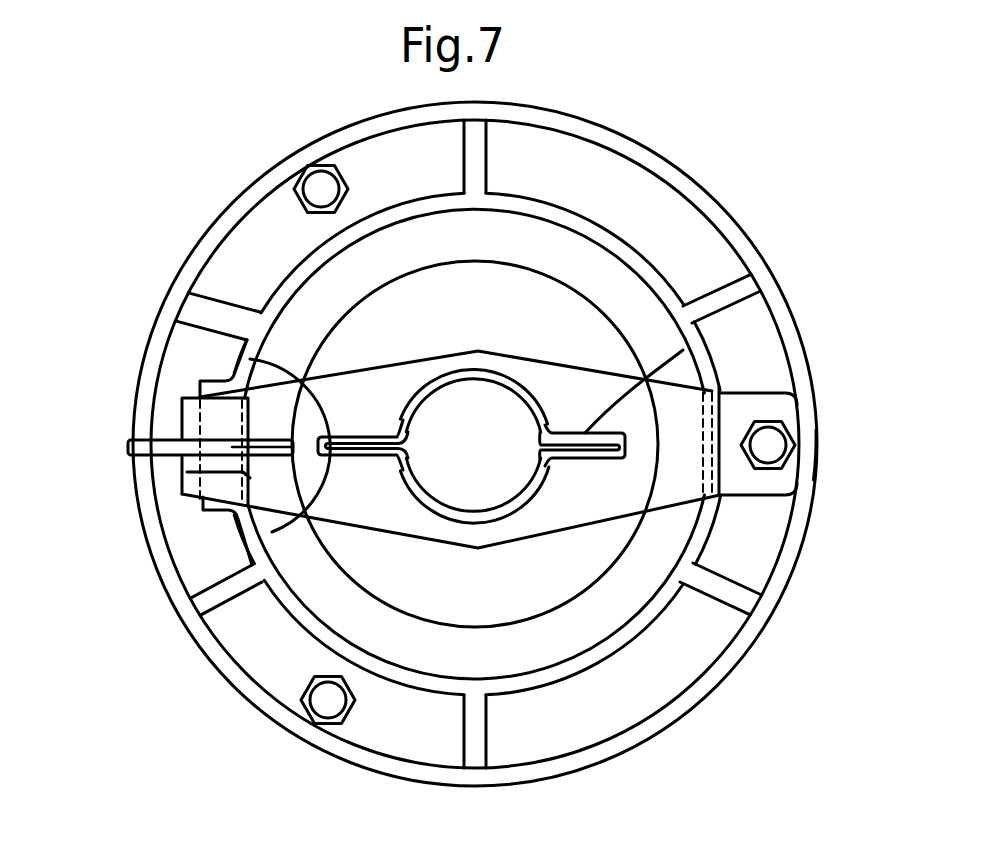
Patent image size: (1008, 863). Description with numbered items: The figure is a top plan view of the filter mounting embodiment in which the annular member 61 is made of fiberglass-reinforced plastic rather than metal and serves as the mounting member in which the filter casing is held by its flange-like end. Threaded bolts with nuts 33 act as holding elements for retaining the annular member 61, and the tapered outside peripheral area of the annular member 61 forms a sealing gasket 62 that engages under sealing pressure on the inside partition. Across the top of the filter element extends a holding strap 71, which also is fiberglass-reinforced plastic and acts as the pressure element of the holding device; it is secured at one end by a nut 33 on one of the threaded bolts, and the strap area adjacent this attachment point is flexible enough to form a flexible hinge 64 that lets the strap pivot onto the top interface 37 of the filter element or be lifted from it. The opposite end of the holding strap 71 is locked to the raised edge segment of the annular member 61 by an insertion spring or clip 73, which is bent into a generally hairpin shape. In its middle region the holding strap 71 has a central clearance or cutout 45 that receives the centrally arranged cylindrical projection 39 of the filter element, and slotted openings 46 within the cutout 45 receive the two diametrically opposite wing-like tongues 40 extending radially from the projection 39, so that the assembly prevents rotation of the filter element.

The nut 33 is at (320, 189).
The top interface 37 is at (607, 316).
The circular cylindrically shaped projection 39 is at (480, 470).
The wing-like tongues 40 is at (583, 433).
The central clearance or cutout 45 is at (512, 378).
The slotted openings 46 is at (270, 370).
The annular member 61 is at (688, 655).
The sealing gasket 62 is at (805, 504).
The flexible hinge 64 is at (723, 475).
The holding strap 71 is at (367, 497).
The insertion spring or clip 73 is at (200, 397).